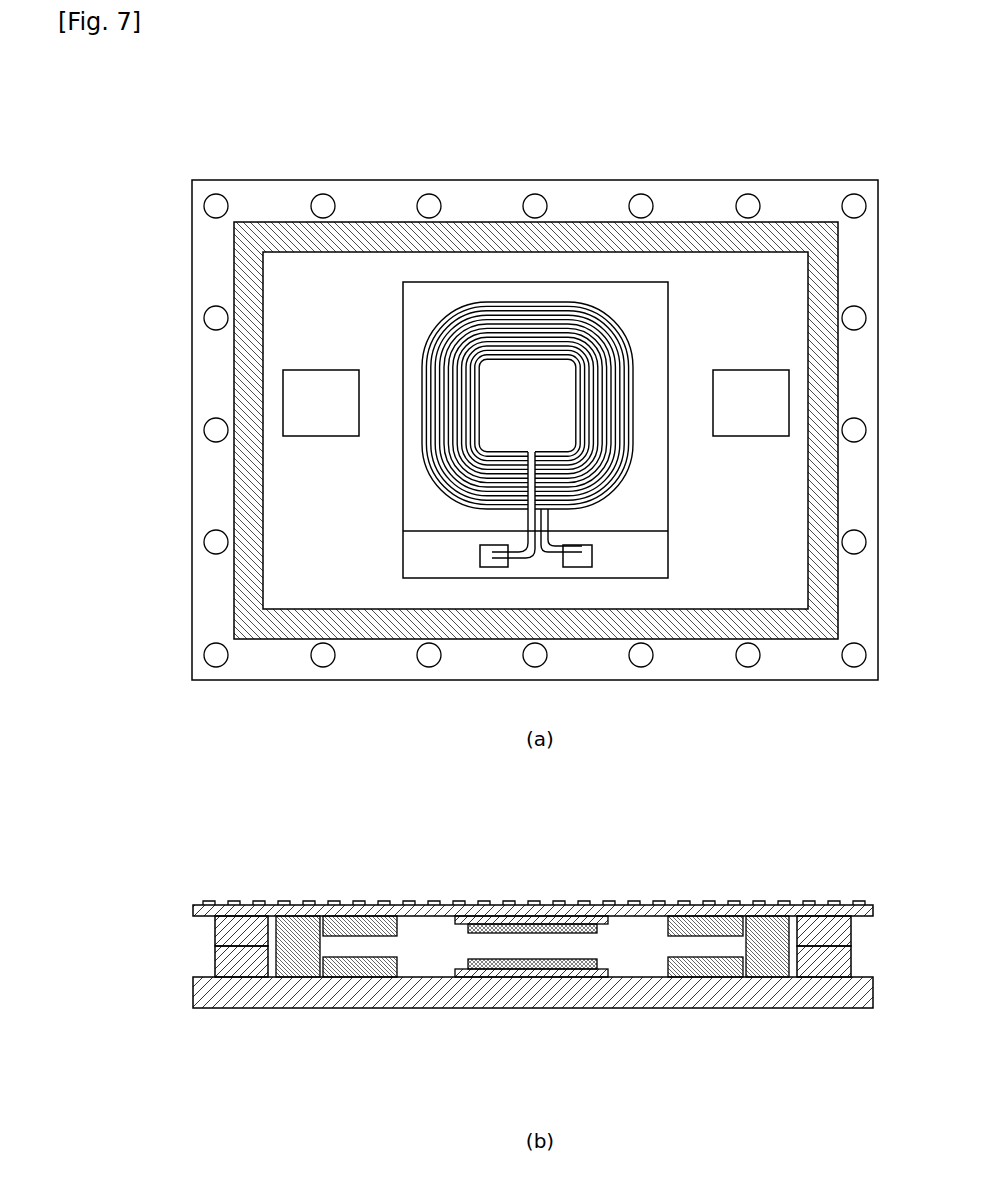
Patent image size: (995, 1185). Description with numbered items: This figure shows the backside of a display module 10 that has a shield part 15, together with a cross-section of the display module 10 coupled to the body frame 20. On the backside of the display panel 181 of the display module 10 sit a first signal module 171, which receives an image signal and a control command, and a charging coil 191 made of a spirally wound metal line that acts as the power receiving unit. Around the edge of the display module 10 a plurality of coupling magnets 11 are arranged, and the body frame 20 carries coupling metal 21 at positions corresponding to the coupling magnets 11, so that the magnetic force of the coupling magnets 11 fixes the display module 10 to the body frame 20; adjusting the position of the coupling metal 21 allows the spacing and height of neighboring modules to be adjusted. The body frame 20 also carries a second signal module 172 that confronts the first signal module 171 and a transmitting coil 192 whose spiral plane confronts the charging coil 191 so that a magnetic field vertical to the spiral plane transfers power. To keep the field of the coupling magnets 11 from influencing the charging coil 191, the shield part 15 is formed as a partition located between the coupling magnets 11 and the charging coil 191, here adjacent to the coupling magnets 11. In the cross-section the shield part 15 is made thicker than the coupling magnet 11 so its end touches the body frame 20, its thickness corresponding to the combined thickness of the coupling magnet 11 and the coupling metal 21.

The display module 10 is at (164, 94).
The coupling magnet 11 is at (853, 206).
The shield part 15 is at (822, 578).
The body frame 20 is at (610, 992).
The coupling metal 21 is at (233, 968).
The first signal module 171 is at (322, 370).
The second signal module 172 is at (363, 963).
The display panel 181 is at (853, 292).
The charging coil 191 is at (460, 337).
The transmitting coil 192 is at (516, 964).